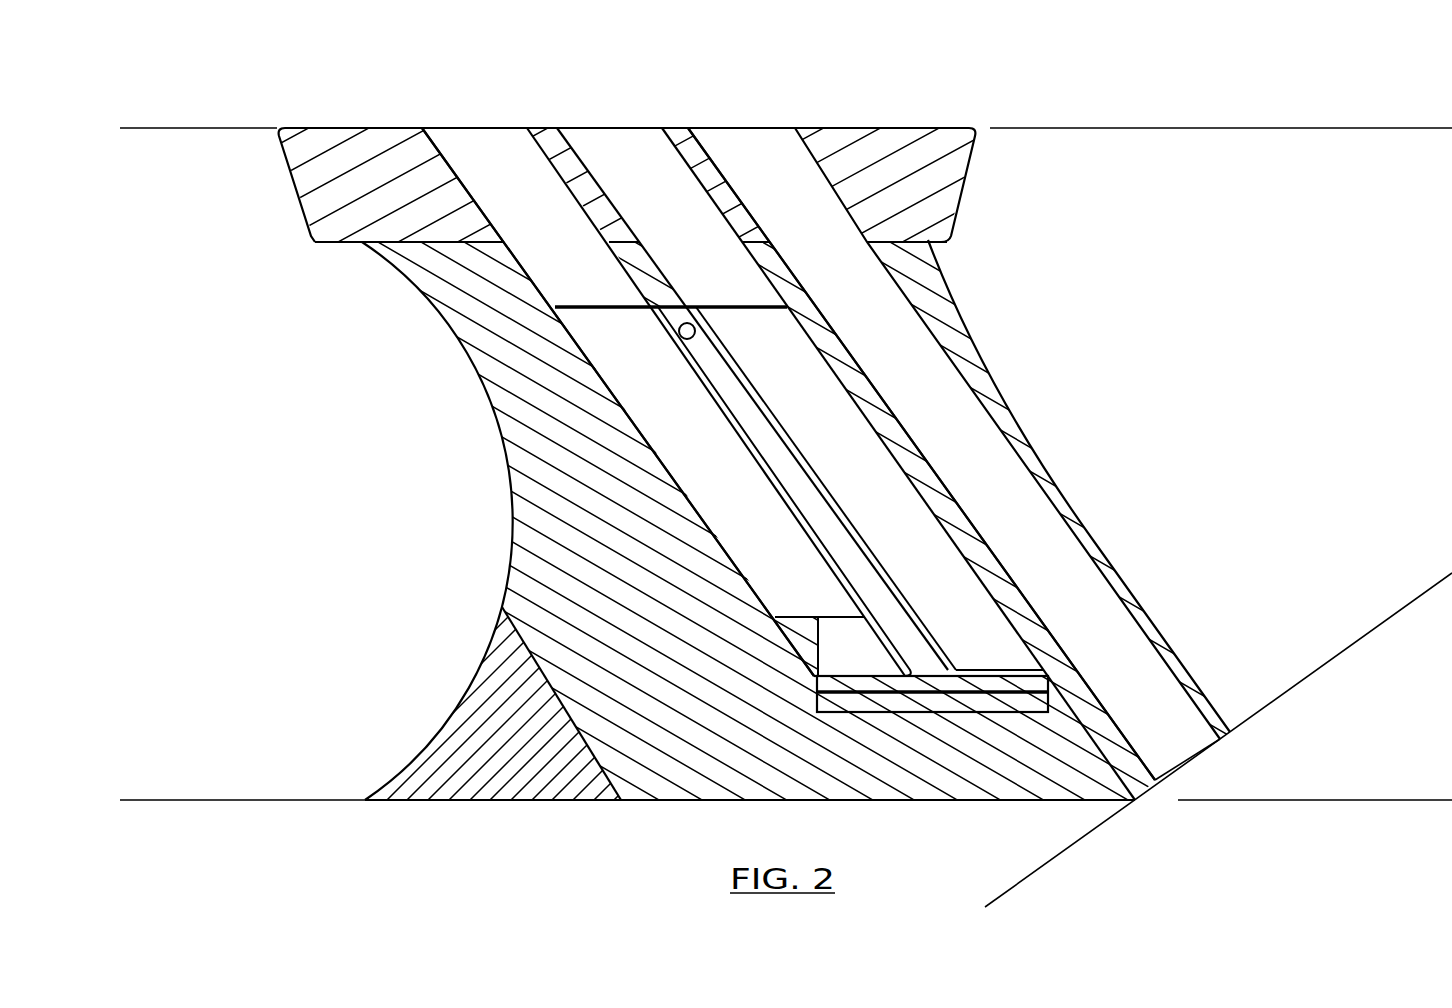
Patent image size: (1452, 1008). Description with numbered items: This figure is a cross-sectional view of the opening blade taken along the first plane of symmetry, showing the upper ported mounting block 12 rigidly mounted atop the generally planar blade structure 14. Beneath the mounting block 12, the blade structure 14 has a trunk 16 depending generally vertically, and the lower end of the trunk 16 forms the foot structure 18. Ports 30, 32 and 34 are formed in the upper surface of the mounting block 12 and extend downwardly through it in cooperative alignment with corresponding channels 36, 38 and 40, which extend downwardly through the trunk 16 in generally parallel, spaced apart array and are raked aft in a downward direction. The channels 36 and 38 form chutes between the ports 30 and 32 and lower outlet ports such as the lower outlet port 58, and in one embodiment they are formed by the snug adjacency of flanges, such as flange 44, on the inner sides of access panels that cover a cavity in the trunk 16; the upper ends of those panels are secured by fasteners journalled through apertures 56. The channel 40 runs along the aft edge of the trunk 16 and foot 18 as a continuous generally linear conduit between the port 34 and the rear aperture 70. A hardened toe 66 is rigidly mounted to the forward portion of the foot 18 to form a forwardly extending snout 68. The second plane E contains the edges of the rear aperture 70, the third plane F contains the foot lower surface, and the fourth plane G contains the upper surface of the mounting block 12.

The upper ported mounting block 12 is at (978, 172).
The blade structure 14 is at (383, 498).
The trunk 16 is at (1227, 563).
The foot structure 18 is at (632, 818).
The port 30 is at (470, 127).
The port 32 is at (618, 127).
The port 34 is at (752, 127).
The channel 36 is at (633, 352).
The channel 38 is at (775, 345).
The channel 40 is at (955, 437).
The flange 44 is at (853, 565).
The aperture 56 is at (681, 338).
The lower outlet port 58 is at (868, 660).
The toe 66 is at (490, 803).
The snout 68 is at (340, 800).
The rear aperture 70 is at (1183, 752).
The fourth plane G is at (1352, 128).
The second plane E is at (1308, 678).
The third plane F is at (1293, 802).